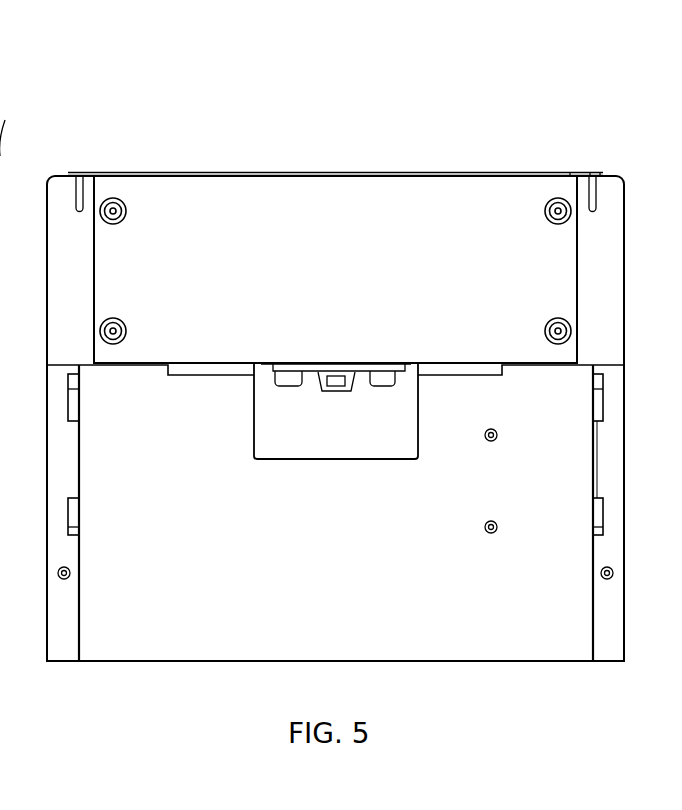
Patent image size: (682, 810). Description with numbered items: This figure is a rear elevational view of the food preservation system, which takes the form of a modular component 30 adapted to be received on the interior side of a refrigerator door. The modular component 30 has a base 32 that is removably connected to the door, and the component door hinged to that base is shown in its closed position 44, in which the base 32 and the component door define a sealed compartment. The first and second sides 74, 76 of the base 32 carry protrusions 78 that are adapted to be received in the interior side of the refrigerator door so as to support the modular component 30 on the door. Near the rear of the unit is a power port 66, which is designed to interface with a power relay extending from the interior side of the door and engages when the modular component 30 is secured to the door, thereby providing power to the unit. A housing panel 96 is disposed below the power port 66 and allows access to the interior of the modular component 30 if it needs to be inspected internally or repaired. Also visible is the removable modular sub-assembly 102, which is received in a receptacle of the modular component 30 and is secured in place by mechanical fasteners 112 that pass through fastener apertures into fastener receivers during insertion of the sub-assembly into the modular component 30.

The modular component 30 is at (386, 94).
The removable modular sub-assembly 102 is at (566, 158).
The mechanical fasteners 112 is at (116, 224).
The housing panel 96 is at (360, 553).
The power port 66 is at (337, 392).
The protrusions 78 is at (68, 402).
The second side 76 is at (47, 460).
The first side 74 is at (624, 460).
The base 32 is at (79, 600).
The closed position 44 is at (11, 128).